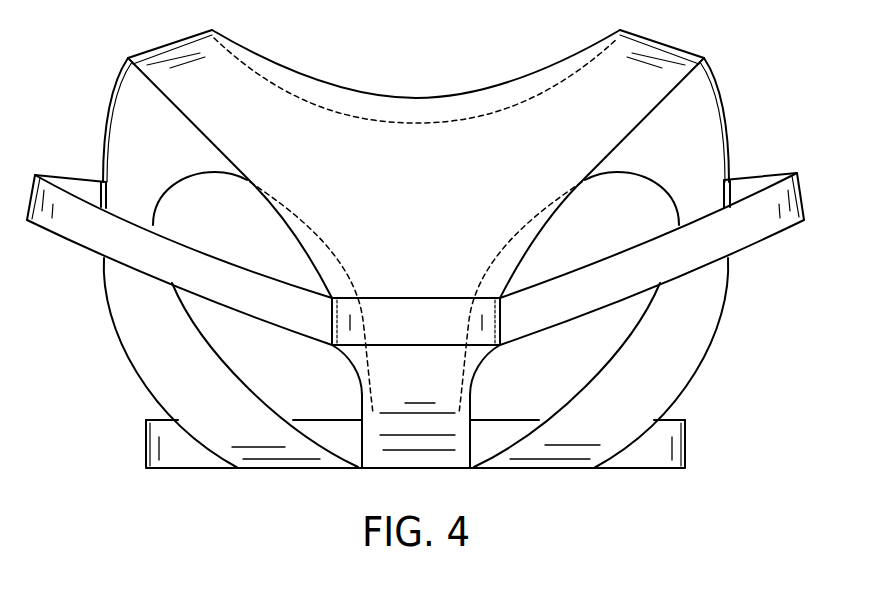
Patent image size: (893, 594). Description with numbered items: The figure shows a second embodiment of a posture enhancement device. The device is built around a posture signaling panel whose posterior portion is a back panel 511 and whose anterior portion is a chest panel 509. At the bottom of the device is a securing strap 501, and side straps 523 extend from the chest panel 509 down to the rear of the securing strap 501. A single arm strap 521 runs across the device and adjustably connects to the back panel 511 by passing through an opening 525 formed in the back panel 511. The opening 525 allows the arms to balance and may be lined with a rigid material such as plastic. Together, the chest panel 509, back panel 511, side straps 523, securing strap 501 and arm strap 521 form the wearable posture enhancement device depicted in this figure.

The securing strap 501 is at (190, 460).
The chest panel 509 is at (358, 122).
The back panel 511 is at (527, 238).
The arm strap 521 is at (205, 271).
The side straps 523 is at (157, 357).
The opening 525 is at (332, 323).